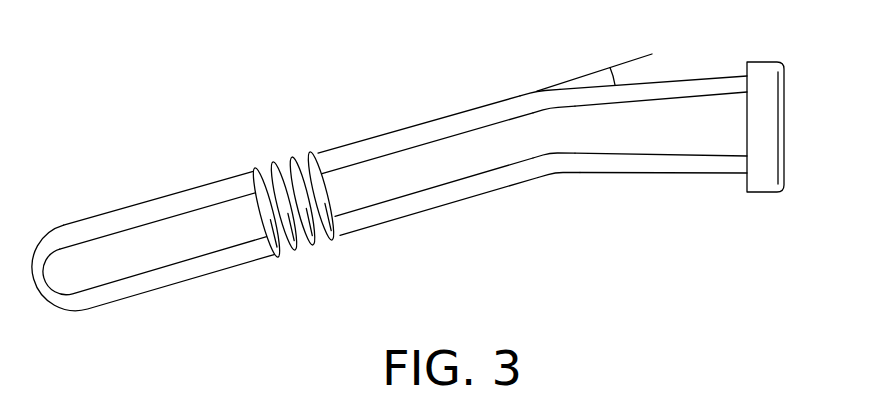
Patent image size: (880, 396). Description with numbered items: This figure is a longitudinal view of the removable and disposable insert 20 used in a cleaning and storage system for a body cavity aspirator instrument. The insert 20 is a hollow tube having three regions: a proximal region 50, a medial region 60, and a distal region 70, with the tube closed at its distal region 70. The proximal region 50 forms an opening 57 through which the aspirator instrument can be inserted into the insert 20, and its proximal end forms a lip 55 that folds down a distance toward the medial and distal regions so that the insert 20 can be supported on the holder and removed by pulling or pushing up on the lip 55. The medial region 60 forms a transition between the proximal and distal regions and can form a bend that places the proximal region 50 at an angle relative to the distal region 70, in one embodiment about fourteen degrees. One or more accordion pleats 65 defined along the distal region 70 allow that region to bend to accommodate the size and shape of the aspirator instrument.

The removable and disposable insert 20 is at (391, 114).
The proximal region 50 is at (713, 80).
The lip 55 is at (763, 193).
The opening 57 is at (785, 143).
The medial region 60 is at (538, 175).
The accordion pleats 65 is at (313, 248).
The distal region 70 is at (130, 297).